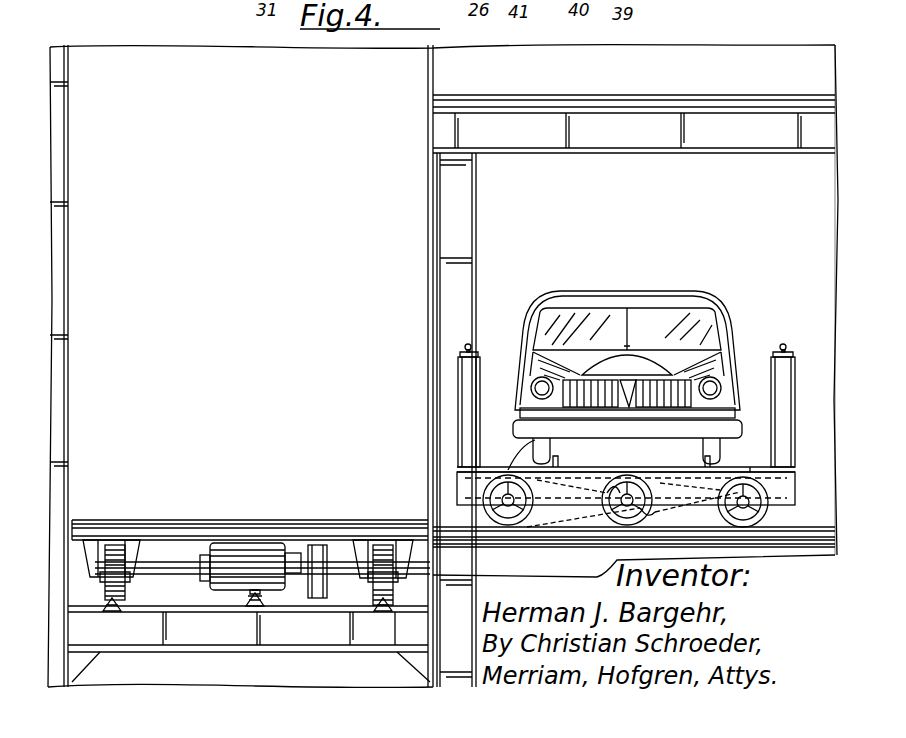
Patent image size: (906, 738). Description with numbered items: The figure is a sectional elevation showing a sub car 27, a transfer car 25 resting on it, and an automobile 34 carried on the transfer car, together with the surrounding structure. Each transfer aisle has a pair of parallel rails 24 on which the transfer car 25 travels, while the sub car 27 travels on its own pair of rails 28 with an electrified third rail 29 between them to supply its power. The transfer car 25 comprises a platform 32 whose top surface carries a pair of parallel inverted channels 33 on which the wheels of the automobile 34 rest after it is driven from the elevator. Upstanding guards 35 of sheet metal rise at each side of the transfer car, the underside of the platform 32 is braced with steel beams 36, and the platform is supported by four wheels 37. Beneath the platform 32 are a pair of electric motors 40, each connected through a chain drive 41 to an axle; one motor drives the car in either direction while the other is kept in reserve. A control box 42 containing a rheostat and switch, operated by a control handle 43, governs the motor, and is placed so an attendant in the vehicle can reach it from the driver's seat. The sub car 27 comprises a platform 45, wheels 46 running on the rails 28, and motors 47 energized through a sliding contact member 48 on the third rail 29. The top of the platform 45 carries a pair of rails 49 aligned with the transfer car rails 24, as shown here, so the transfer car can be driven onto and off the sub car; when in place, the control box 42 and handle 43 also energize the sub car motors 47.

The transfer aisle rails 24 is at (578, 97).
The transfer car 25 is at (806, 399).
The sub car 27 is at (293, 512).
The sub car rails 28 is at (104, 606).
The sub car electrified third rail 29 is at (222, 601).
The platform 32 is at (746, 466).
The inverted channels 33 is at (705, 462).
The automobile 34 is at (690, 294).
The upstanding guards 35 is at (482, 380).
The steel beams 36 is at (788, 495).
The transfer car wheels 37 is at (516, 512).
The electric motors 40 is at (672, 494).
The chain drive 41 is at (650, 515).
The control box 42 is at (458, 370).
The control handle 43 is at (464, 346).
The sub car platform 45 is at (176, 538).
The sub car wheels 46 is at (118, 542).
The sub car motors 47 is at (235, 555).
The sliding contact member 48 is at (262, 596).
The sub car platform rails 49 is at (130, 518).